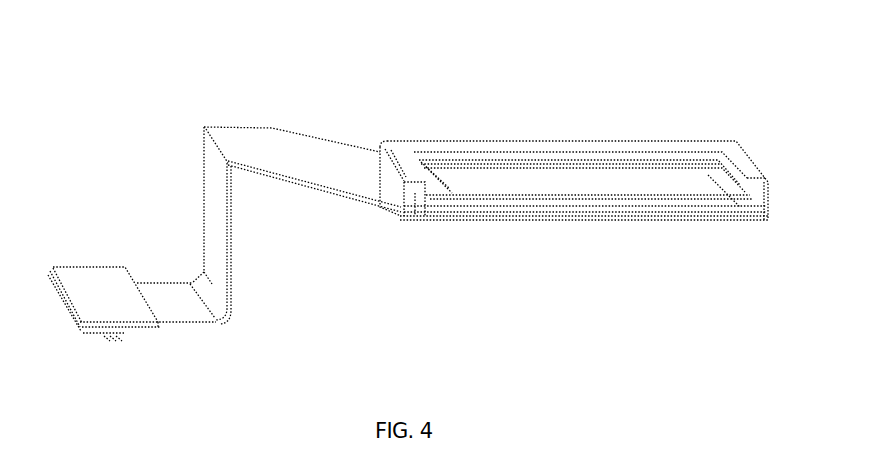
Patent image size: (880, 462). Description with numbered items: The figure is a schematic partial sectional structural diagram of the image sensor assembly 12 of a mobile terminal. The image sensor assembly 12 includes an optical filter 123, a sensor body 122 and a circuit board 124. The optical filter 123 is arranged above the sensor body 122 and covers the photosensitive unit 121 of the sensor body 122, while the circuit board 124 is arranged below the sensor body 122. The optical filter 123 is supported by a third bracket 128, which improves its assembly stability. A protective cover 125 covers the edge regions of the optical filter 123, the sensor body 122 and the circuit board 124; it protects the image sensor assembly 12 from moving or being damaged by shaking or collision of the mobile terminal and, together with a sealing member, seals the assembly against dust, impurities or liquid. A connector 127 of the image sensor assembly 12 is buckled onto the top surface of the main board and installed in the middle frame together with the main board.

The image sensor assembly 12 is at (103, 45).
The photosensitive unit 121 is at (499, 200).
The sensor body 122 is at (573, 205).
The optical filter 123 is at (602, 188).
The circuit board 124 is at (463, 217).
The protective cover 125 is at (404, 180).
The connector 127 is at (118, 282).
The third bracket 128 is at (423, 195).